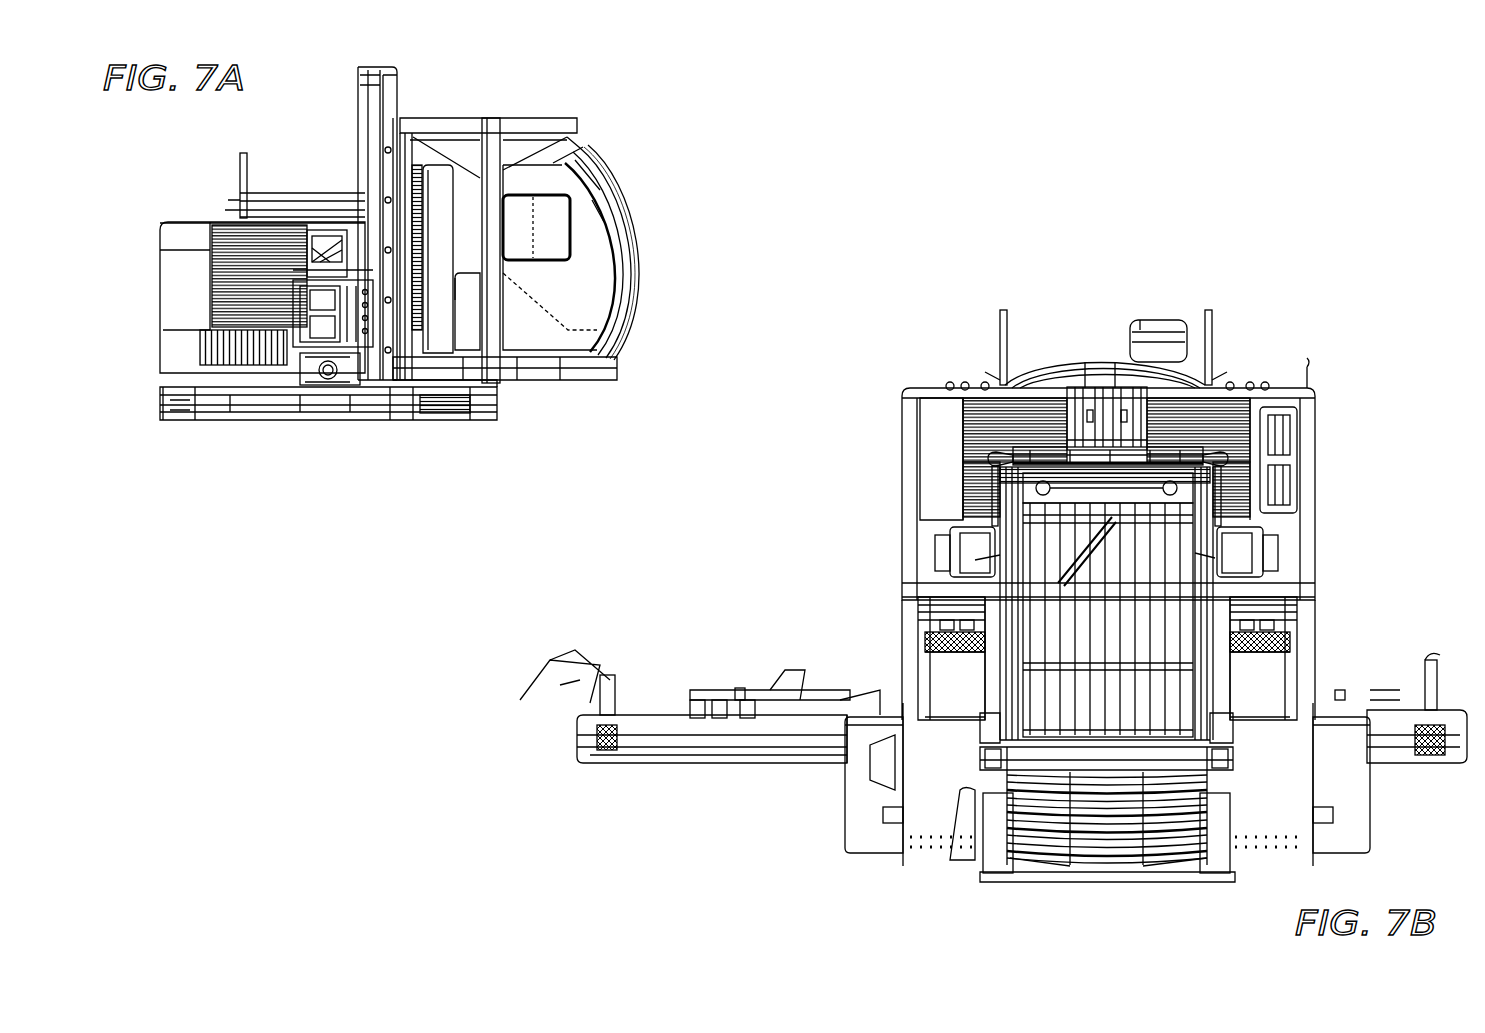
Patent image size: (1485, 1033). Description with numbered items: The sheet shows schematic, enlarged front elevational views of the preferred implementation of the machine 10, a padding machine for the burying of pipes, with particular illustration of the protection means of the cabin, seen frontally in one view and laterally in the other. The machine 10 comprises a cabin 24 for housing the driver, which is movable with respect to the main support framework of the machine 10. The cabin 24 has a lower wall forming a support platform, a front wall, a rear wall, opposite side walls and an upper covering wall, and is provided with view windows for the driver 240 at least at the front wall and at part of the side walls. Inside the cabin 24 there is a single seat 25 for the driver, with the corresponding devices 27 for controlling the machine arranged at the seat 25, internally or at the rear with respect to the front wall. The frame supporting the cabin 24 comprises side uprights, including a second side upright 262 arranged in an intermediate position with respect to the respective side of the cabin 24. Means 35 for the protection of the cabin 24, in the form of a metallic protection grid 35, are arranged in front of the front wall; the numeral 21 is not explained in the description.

In FIG. 7B, the machine 10 is at (993, 564).
In FIG. 7A, the cab 21 is at (617, 216).
In FIG. 7B, the cabin 24 is at (1041, 466).
In FIG. 7A, the single seat 25 is at (470, 192).
In FIG. 7A, the devices for controlling the machine 27 is at (560, 287).
In FIG. 7A, the means for the protection of the cabin 35 is at (630, 247).
In FIG. 7B, the means for the protection of the cabin 35 is at (1150, 510).
In FIG. 7A, the view windows for the driver 240 is at (565, 213).
In FIG. 7B, the view windows for the driver 240 is at (1153, 557).
In FIG. 7A, the second side upright 262 is at (492, 118).